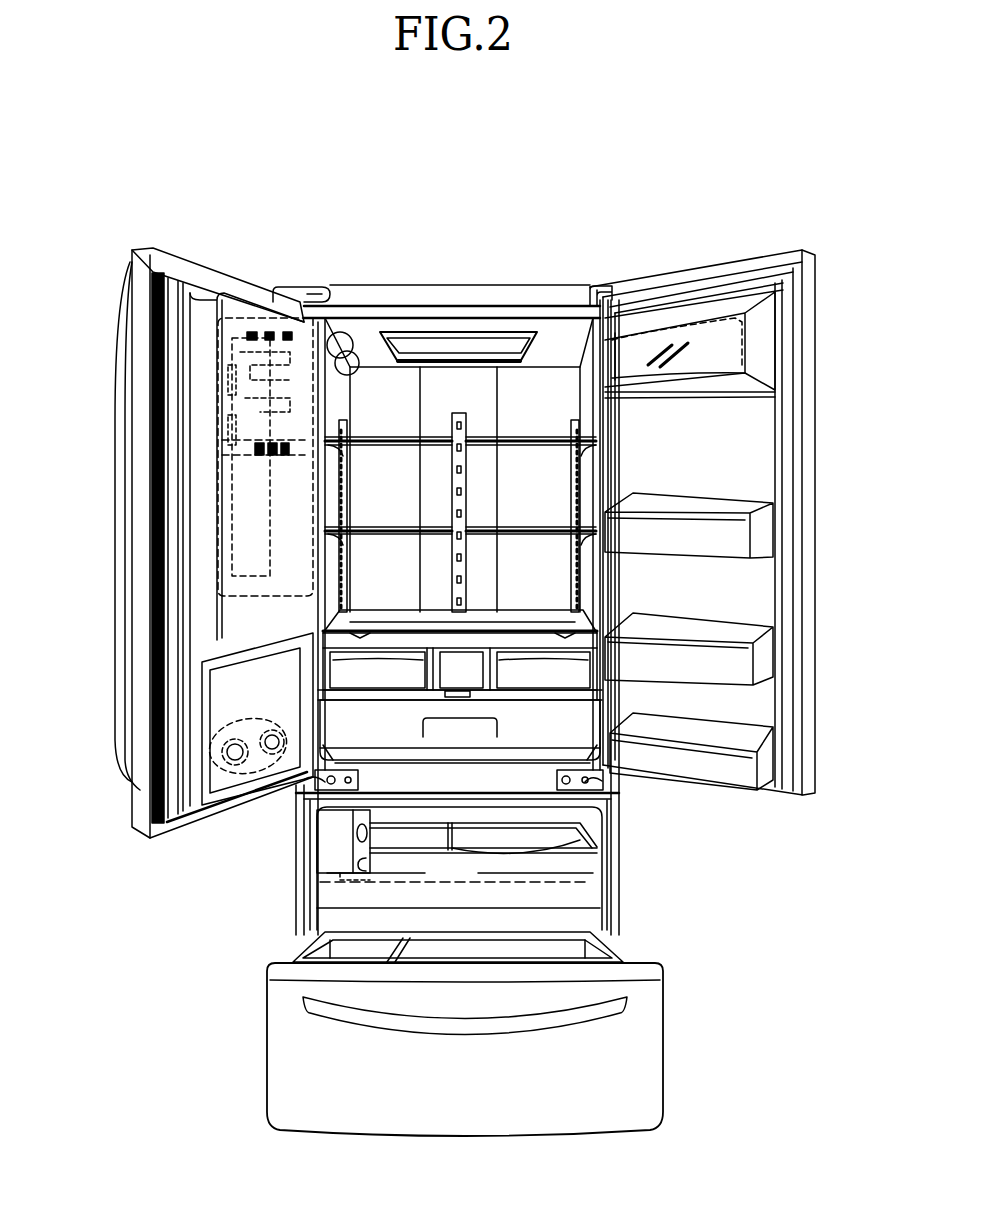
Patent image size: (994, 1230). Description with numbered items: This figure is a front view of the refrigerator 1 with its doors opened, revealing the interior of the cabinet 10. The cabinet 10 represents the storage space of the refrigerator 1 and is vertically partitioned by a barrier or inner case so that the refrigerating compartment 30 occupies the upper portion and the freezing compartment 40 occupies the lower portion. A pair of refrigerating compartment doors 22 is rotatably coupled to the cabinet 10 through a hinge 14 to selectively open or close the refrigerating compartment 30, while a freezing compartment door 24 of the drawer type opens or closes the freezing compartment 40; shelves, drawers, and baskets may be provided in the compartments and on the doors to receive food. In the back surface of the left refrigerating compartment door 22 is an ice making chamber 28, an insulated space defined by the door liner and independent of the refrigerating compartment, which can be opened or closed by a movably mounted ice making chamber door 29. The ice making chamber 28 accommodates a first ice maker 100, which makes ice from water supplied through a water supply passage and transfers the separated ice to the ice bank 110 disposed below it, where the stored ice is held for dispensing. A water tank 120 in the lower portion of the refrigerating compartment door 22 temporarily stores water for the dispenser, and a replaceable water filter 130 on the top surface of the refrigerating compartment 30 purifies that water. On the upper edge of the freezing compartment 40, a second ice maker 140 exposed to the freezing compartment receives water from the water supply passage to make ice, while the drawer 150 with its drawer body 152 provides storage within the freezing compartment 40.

The refrigerator 1 is at (503, 238).
The cabinet 10 is at (440, 312).
The hinge 14 is at (285, 287).
The refrigerating compartment door 22 is at (133, 271).
The freezing compartment door 24 is at (640, 1062).
The ice making chamber 28 is at (208, 512).
The ice making chamber door 29 is at (193, 296).
The refrigerating compartment 30 is at (531, 500).
The freezing compartment 40 is at (465, 895).
The first ice maker 100 is at (233, 318).
The ice bank 110 is at (267, 485).
The water tank 120 is at (215, 760).
The water filter 130 is at (343, 342).
The second ice maker 140 is at (318, 835).
The freezer drawer 150 is at (585, 893).
The drawer body 152 is at (585, 830).